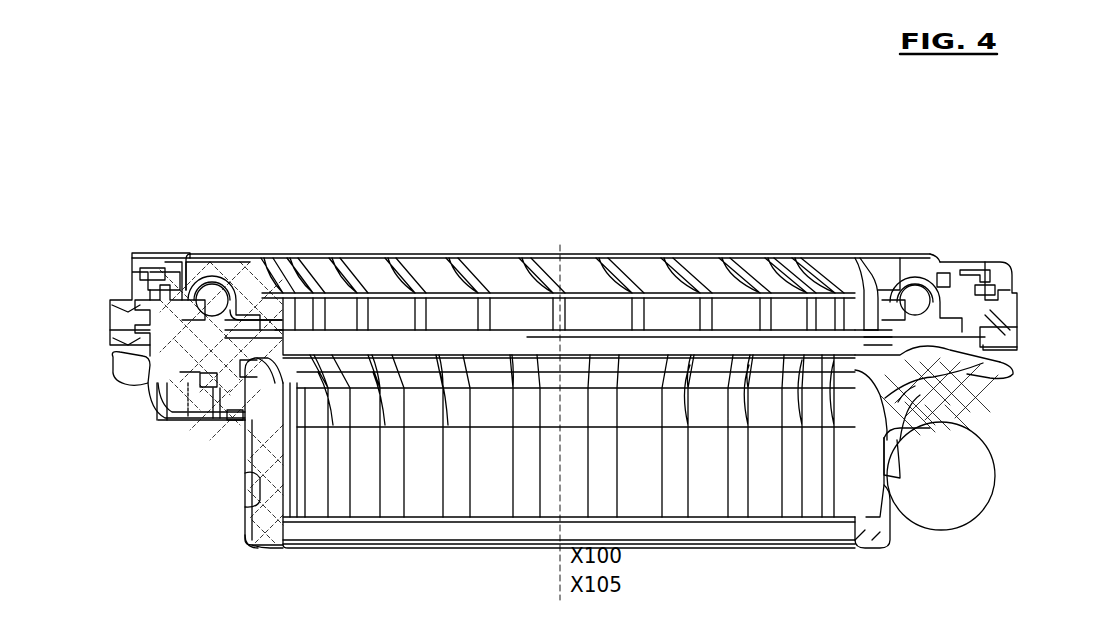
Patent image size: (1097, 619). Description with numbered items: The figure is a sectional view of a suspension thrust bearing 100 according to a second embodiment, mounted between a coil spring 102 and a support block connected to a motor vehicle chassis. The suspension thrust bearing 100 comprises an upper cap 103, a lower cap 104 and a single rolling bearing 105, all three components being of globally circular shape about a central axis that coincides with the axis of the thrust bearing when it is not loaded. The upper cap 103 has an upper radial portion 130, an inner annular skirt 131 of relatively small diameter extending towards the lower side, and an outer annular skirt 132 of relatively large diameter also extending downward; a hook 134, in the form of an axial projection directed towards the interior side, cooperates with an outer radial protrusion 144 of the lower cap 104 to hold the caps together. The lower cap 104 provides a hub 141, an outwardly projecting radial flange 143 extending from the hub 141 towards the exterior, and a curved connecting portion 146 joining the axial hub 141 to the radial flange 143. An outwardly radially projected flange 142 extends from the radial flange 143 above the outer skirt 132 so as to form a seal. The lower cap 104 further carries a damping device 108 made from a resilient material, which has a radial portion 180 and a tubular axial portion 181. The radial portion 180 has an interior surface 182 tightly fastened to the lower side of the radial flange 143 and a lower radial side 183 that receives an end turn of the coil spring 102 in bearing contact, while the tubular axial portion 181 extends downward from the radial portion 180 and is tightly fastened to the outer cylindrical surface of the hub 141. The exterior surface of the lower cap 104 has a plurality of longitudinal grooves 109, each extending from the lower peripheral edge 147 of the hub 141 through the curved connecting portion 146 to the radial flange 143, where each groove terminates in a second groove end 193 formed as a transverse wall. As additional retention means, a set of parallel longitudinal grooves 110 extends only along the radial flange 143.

The suspension thrust bearing 100 is at (318, 215).
The coil spring 102 is at (950, 520).
The upper cap 103 is at (221, 250).
The lower cap 104 is at (124, 268).
The rolling bearing 105 is at (193, 256).
The damping device 108 is at (158, 420).
The longitudinal grooves 109 is at (255, 488).
The parallel longitudinal grooves 110 is at (145, 384).
The upper radial portion 130 is at (940, 256).
The inner annular skirt 131 is at (848, 258).
The outer annular skirt 132 is at (1020, 275).
The hook 134 is at (1017, 330).
The hub 141 is at (318, 522).
The outwardly radially projected flange 142 is at (1015, 368).
The radial flange 143 is at (112, 330).
The outer radial protrusion 144 is at (992, 272).
The curved connecting portion 146 is at (238, 420).
The lower peripheral edge 147 is at (258, 545).
The radial portion 180 is at (168, 422).
The tubular axial portion 181 is at (892, 500).
The interior surface 182 is at (945, 370).
The lower radial side 183 is at (932, 430).
The second groove end 193 is at (190, 420).